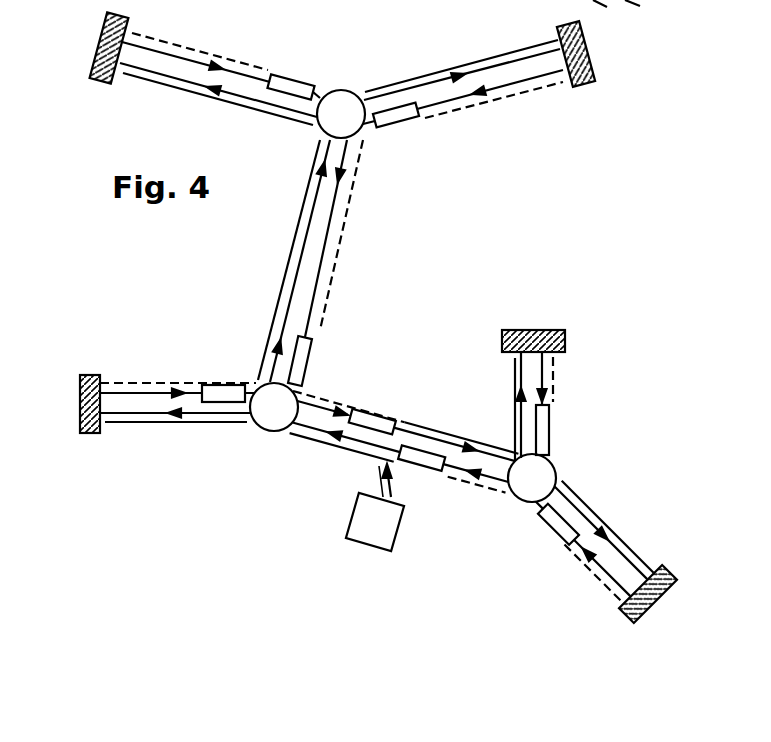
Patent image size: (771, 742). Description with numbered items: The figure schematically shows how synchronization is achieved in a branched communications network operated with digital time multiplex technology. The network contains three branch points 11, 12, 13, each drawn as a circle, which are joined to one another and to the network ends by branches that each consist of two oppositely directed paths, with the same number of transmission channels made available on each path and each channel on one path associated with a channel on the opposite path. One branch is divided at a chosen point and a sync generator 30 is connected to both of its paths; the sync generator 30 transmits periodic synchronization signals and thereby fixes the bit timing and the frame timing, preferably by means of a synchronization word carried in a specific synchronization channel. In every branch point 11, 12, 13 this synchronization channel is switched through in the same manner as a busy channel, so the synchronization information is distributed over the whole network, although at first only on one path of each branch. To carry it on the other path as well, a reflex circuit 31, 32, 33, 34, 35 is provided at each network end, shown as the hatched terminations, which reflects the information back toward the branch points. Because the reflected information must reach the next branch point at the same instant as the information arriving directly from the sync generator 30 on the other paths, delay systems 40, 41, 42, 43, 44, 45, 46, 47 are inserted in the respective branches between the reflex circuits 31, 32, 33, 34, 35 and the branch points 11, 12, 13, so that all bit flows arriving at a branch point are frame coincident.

The branch point 11 is at (548, 475).
The branch point 12 is at (272, 424).
The branch point 13 is at (345, 100).
The sync generator 30 is at (387, 533).
The reflex circuit 31 is at (664, 592).
The reflex circuit 32 is at (526, 330).
The reflex circuit 33 is at (80, 412).
The reflex circuit 34 is at (586, 62).
The reflex circuit 35 is at (95, 52).
The delay system 40 is at (553, 530).
The delay system 41 is at (550, 428).
The delay system 42 is at (423, 466).
The delay system 43 is at (378, 420).
The delay system 44 is at (306, 360).
The delay system 45 is at (226, 386).
The delay system 46 is at (403, 118).
The delay system 47 is at (297, 82).